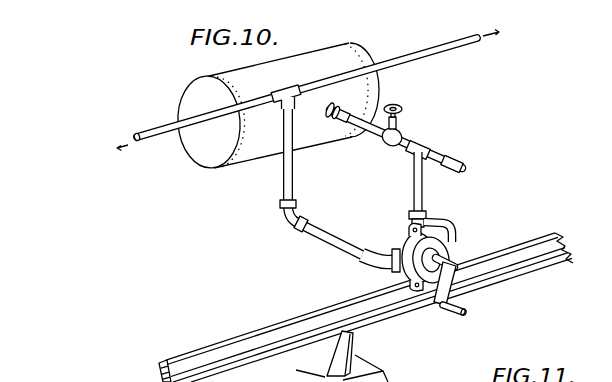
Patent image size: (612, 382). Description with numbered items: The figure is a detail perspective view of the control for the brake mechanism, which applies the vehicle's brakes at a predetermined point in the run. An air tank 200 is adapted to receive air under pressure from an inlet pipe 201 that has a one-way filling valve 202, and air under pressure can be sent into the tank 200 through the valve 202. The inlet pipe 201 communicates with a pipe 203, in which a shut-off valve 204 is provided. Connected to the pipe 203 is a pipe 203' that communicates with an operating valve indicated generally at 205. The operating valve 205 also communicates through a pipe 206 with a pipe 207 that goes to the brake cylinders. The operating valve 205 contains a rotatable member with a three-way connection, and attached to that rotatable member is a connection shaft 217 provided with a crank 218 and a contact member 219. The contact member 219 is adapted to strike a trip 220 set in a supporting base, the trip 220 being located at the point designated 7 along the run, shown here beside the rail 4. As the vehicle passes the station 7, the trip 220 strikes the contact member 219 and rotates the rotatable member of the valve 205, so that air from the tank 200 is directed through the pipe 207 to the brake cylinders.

The air tank 200 is at (188, 98).
The pipe 207 is at (421, 57).
The pipe 206 is at (345, 243).
The pipe 203 is at (393, 136).
The shut-off valve 204 is at (397, 133).
The inlet pipe 201 is at (440, 155).
The one-way filling valve 202 is at (461, 165).
The pipe 203' is at (397, 184).
The operating valve 205 is at (403, 243).
The connection shaft 217 is at (455, 259).
The crank 218 is at (437, 303).
The contact member 219 is at (466, 311).
The trip 220 is at (355, 350).
The rail 4 is at (553, 235).
The point 7 is at (391, 370).